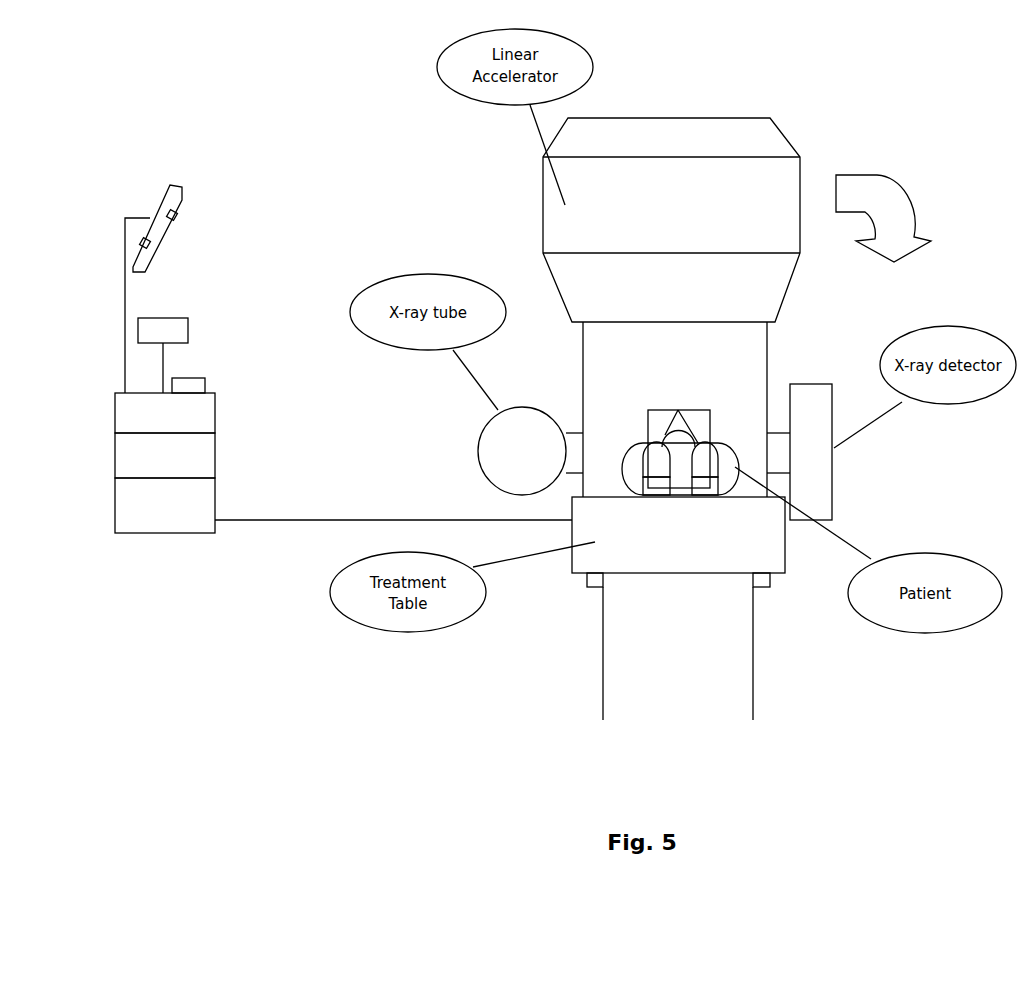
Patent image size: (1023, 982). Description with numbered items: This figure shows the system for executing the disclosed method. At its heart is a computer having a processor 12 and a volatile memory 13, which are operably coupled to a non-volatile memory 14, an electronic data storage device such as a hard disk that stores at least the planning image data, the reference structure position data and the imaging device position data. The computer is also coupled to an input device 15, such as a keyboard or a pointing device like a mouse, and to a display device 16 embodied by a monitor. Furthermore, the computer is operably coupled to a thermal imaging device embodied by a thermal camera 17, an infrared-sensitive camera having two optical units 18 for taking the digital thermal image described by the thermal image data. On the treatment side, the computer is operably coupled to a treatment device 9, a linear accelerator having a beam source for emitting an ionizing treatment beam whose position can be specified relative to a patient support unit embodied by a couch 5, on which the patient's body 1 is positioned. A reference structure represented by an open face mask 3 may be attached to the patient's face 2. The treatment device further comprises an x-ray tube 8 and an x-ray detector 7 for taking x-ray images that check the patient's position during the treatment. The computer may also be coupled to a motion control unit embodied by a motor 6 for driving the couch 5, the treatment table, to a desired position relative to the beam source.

The patient's body 1 is at (632, 452).
The patient's face 2 is at (670, 433).
The open face mask 3 is at (712, 430).
The couch 5 is at (572, 573).
The motor 6 is at (688, 625).
The x-ray detector 7 is at (834, 462).
The x-ray tube 8 is at (477, 452).
The treatment device 9 is at (540, 195).
The processor 12 is at (215, 427).
The volatile memory 13 is at (215, 460).
The non-volatile memory 14 is at (215, 502).
The input device 15 is at (192, 378).
The display device 16 is at (187, 323).
The thermal camera 17 is at (153, 220).
The optical units 18 is at (180, 207).